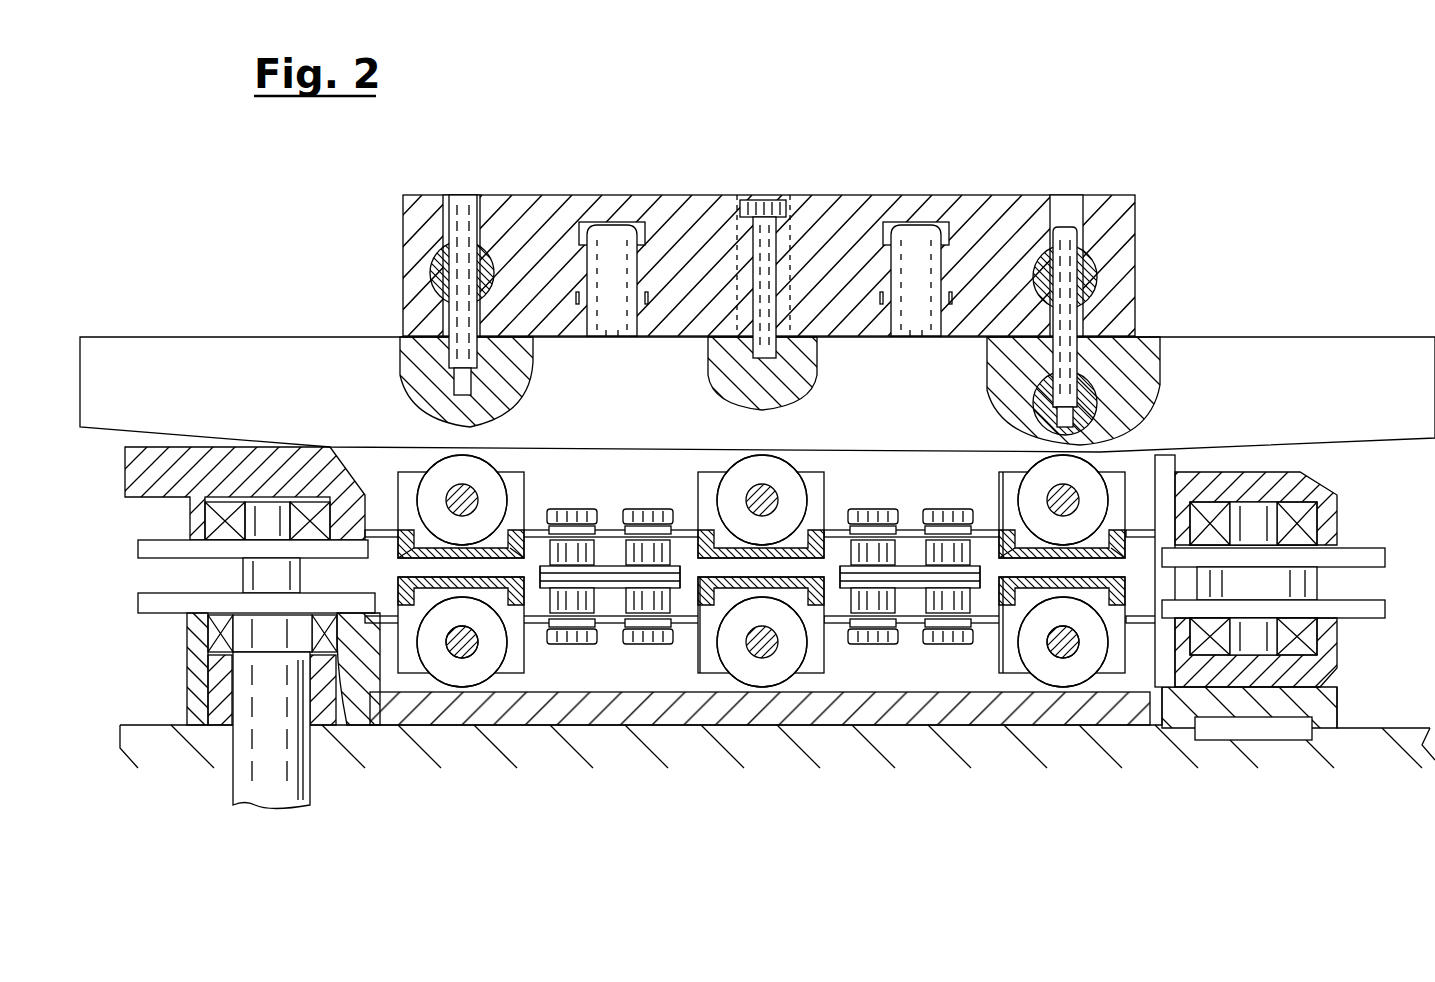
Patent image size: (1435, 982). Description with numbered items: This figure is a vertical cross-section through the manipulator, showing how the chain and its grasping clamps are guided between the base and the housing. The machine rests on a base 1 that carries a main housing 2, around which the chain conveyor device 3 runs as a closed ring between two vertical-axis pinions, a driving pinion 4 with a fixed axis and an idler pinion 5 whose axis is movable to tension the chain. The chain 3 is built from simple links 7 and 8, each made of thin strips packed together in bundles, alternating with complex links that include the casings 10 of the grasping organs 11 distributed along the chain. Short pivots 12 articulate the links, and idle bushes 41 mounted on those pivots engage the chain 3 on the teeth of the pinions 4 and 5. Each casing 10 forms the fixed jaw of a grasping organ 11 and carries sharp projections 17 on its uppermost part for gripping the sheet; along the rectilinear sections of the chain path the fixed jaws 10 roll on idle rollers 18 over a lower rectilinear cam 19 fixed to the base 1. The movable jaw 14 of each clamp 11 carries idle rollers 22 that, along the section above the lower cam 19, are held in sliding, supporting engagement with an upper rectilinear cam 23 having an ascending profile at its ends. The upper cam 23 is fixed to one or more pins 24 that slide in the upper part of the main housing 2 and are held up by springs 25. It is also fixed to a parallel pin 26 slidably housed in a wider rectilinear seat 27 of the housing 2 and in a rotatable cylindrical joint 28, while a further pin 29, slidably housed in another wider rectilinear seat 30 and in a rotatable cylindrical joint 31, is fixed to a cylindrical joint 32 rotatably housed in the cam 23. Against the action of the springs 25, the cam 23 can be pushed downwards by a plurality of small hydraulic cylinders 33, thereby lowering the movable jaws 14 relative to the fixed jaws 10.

The base 1 is at (1362, 748).
The main housing 2 is at (850, 222).
The chain conveyor device 3 is at (908, 662).
The vertical axis pinion 4 is at (172, 540).
The vertical axis pinion 5 is at (1357, 550).
The simple link 7 is at (536, 530).
The simple link 8 is at (605, 562).
The casing 10 is at (470, 705).
The grasping organ 11 is at (820, 463).
The short pivot 12 is at (877, 509).
The movable jaw 14 is at (400, 488).
The sharp projection 17 is at (495, 583).
The idle roller 18 is at (463, 682).
The lower cam 19 is at (673, 712).
The idle roller 22 is at (485, 480).
The upper rectilinear cam 23 is at (232, 360).
The pin 24 is at (745, 242).
The spring 25 is at (800, 225).
The parallel pin 26 is at (440, 302).
The wider rectilinear seat 27 is at (471, 230).
The rotatable cylindrical joint 28 is at (458, 255).
The pin 29 is at (1083, 235).
The wider rectilinear seat 30 is at (1065, 232).
The rotatable cylindrical joint 31 is at (1095, 272).
The cylindrical joint 32 is at (1112, 398).
The small hydraulic cylinder 33 is at (628, 230).
The idle bush 41 is at (682, 588).